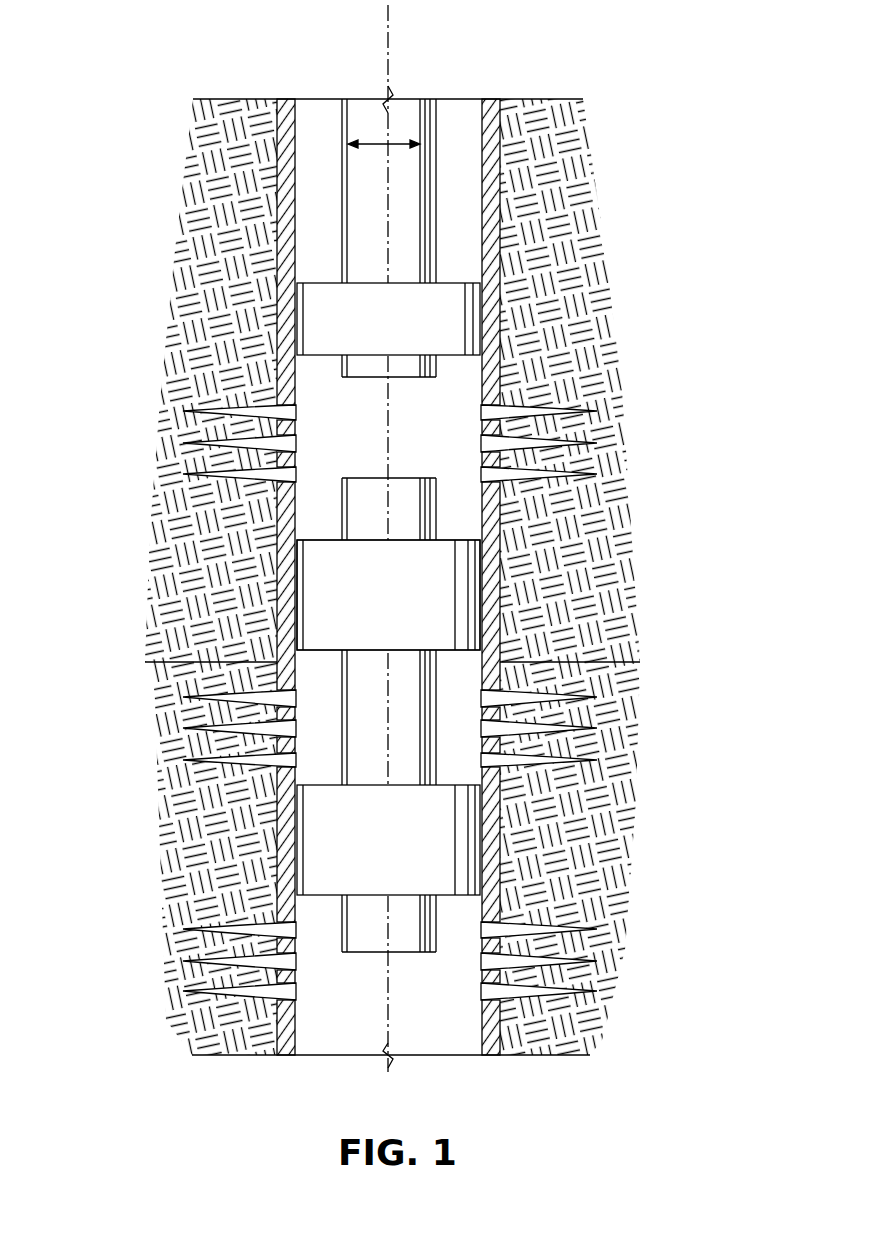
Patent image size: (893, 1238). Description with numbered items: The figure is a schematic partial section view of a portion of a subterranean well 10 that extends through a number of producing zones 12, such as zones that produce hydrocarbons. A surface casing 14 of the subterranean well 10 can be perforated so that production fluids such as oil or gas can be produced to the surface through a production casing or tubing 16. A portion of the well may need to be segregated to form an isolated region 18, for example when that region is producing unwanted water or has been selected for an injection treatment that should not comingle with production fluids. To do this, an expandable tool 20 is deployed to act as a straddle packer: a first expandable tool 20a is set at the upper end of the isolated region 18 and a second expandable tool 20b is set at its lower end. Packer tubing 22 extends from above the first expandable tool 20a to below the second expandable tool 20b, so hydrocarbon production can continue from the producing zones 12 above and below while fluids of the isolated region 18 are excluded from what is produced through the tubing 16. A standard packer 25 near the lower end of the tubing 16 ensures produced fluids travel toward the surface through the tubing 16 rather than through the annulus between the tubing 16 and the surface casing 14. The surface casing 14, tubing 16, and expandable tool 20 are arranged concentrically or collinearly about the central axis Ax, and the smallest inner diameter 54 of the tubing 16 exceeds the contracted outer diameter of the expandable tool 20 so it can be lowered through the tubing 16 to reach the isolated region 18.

The subterranean well 10 is at (672, 568).
The producing zones 12 is at (220, 297).
The surface casing 14 is at (283, 208).
The production casing or tubing 16 is at (484, 198).
The isolated region 18 is at (455, 740).
The expandable tool 20 is at (325, 585).
The first expandable tool 20a is at (322, 623).
The second expandable tool 20b is at (447, 838).
The packer tubing 22 is at (357, 718).
The standard packer 25 is at (462, 313).
The smallest inner diameter 54 is at (402, 140).
The central axis Ax is at (387, 62).